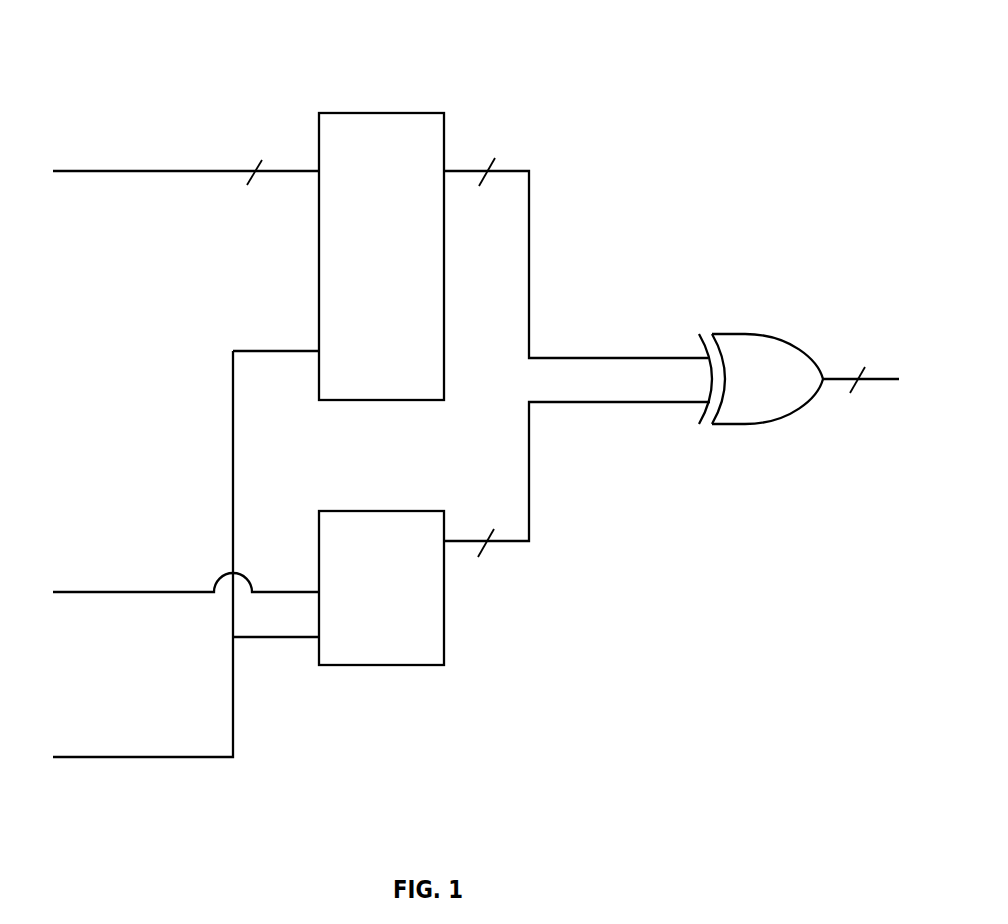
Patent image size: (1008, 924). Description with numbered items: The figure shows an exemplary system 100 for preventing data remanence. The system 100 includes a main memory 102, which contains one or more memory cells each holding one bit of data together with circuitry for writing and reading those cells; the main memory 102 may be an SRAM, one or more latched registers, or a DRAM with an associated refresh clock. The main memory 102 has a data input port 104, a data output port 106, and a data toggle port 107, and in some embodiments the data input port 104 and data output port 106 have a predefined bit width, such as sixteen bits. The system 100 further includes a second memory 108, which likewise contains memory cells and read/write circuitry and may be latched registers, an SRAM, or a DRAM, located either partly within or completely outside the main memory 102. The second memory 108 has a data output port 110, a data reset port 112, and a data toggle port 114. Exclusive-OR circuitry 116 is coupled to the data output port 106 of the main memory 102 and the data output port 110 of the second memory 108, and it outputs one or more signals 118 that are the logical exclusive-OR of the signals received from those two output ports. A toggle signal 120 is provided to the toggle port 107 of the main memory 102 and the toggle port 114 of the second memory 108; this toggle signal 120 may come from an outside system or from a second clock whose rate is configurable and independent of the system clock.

The system 100 is at (465, 54).
The main memory 102 is at (381, 241).
The data input port 104 is at (186, 156).
The data output port 106 is at (576, 243).
The data toggle port 107 is at (276, 335).
The second memory 108 is at (381, 571).
The data output port 110 is at (577, 479).
The data reset port 112 is at (186, 575).
The data toggle port 114 is at (276, 621).
The exclusive-OR circuitry 116 is at (761, 368).
The output signals 118 is at (861, 368).
The toggle signal 120 is at (142, 554).